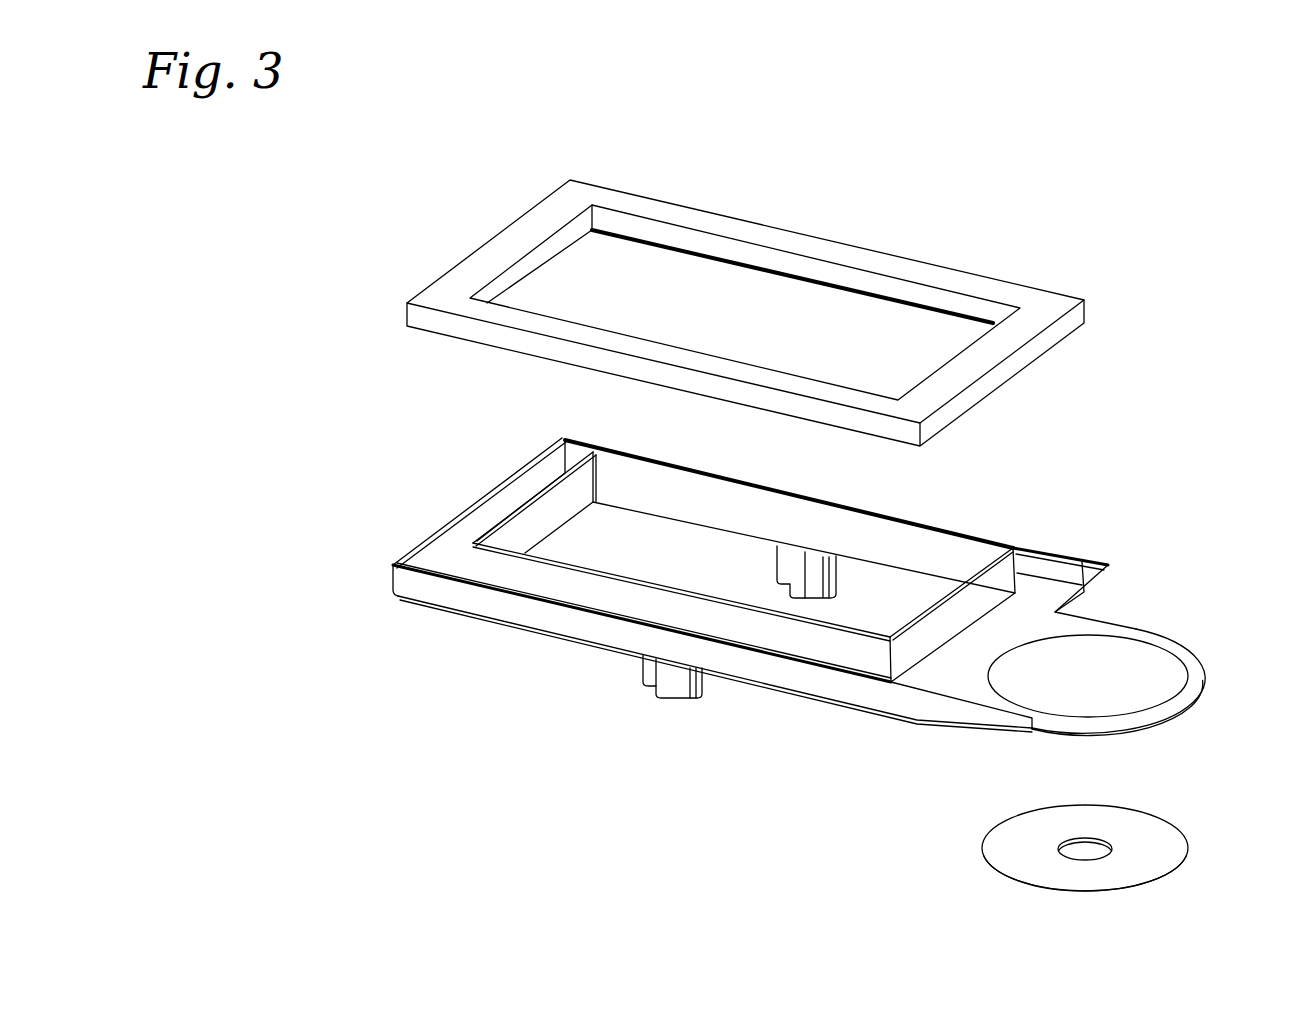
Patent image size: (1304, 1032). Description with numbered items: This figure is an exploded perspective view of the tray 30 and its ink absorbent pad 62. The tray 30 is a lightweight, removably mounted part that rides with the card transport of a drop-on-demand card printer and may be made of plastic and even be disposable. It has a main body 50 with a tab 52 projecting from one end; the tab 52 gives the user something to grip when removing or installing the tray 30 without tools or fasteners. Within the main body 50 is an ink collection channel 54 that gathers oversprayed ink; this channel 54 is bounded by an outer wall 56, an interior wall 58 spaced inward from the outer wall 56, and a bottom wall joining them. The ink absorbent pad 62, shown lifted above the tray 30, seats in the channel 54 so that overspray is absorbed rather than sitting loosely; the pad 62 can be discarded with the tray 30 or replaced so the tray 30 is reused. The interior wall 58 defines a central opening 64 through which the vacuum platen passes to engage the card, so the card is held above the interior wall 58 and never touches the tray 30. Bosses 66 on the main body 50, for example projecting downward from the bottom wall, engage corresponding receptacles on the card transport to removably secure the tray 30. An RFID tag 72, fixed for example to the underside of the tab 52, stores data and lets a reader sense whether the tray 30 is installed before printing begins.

The tray 30 is at (466, 487).
The main body 50 is at (784, 706).
The tab 52 is at (1205, 718).
The ink collection channel 54 is at (1030, 580).
The outer wall 56 is at (465, 595).
The interior wall 58 is at (585, 583).
The ink absorbent pad 62 is at (968, 263).
The central opening 64 is at (880, 590).
The bosses 66 is at (785, 535).
The RFID tag 72 is at (1178, 828).